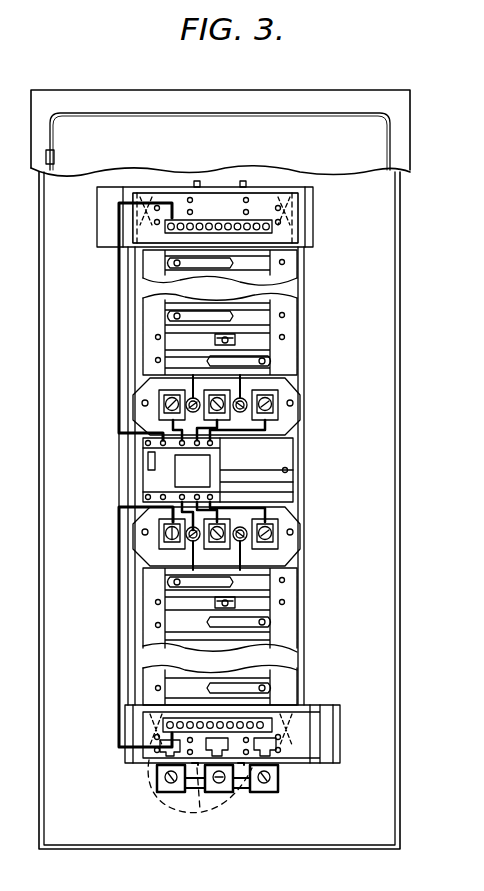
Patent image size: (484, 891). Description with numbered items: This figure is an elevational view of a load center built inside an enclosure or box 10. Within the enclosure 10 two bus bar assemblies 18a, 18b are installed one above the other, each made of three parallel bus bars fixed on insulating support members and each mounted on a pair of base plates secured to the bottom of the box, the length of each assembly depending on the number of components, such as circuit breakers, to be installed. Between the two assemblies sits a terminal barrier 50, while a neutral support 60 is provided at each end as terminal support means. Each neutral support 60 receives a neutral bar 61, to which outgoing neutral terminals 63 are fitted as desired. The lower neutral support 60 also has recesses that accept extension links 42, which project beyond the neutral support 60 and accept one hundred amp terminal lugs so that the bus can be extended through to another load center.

The enclosure 10 is at (400, 568).
The bus bar assembly 18a is at (322, 378).
The bus bar assembly 18b is at (322, 567).
The extension links 42 is at (213, 800).
The terminal barrier 50 is at (282, 508).
The neutral support 60 is at (224, 471).
The neutral bar 61 is at (205, 205).
The outgoing neutral terminals 63 is at (218, 186).